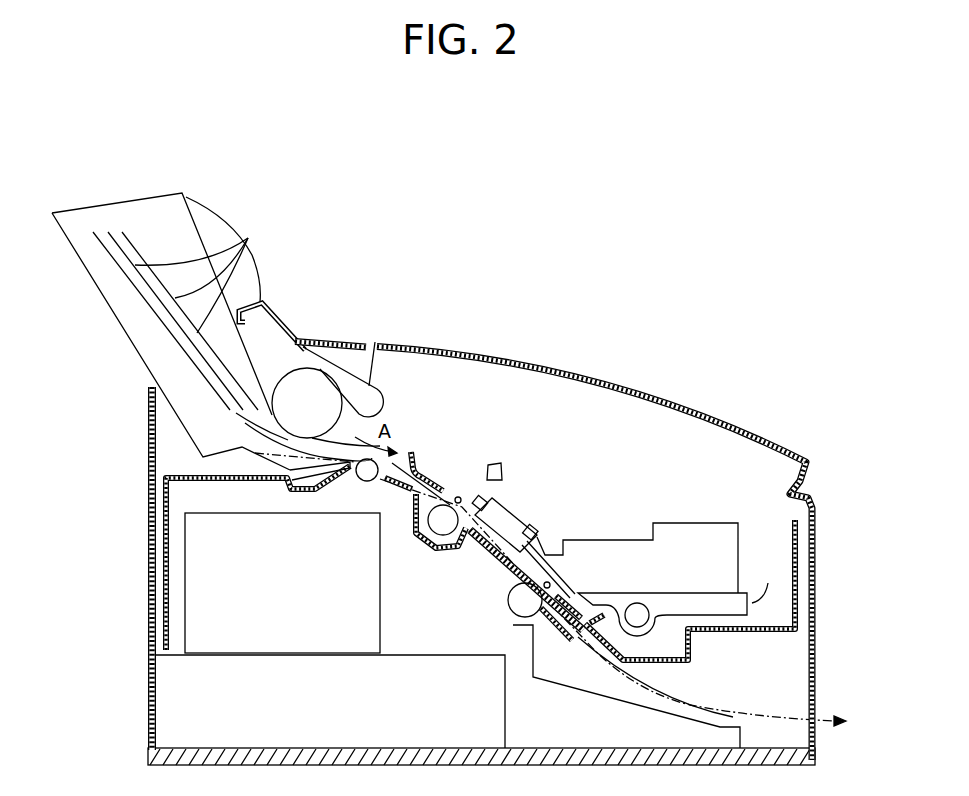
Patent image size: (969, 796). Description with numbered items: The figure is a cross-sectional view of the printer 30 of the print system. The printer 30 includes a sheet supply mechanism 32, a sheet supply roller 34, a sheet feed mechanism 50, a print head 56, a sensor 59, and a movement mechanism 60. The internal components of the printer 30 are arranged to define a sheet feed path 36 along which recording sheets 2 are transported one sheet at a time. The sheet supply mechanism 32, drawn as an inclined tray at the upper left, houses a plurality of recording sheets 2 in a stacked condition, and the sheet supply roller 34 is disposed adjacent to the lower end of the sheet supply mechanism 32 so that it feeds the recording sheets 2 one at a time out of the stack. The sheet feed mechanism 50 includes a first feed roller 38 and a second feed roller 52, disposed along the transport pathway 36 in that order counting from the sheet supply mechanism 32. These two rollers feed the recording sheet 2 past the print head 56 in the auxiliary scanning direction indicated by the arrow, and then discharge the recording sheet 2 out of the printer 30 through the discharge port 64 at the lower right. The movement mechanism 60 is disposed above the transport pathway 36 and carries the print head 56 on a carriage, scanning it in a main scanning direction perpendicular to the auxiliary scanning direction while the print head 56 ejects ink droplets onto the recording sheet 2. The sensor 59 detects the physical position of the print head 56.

The recording sheets 2 is at (248, 238).
The printer 30 is at (498, 345).
The sheet supply mechanism 32 is at (136, 213).
The sheet supply roller 34 is at (290, 383).
The sheet feed path 36 is at (407, 490).
The first feed roller 38 is at (437, 540).
The sheet feed mechanism 50 is at (488, 568).
The second feed roller 52 is at (510, 600).
The print head 56 is at (573, 543).
The sensor 59 is at (503, 468).
The movement mechanism 60 is at (661, 648).
The discharge port 64 is at (836, 716).